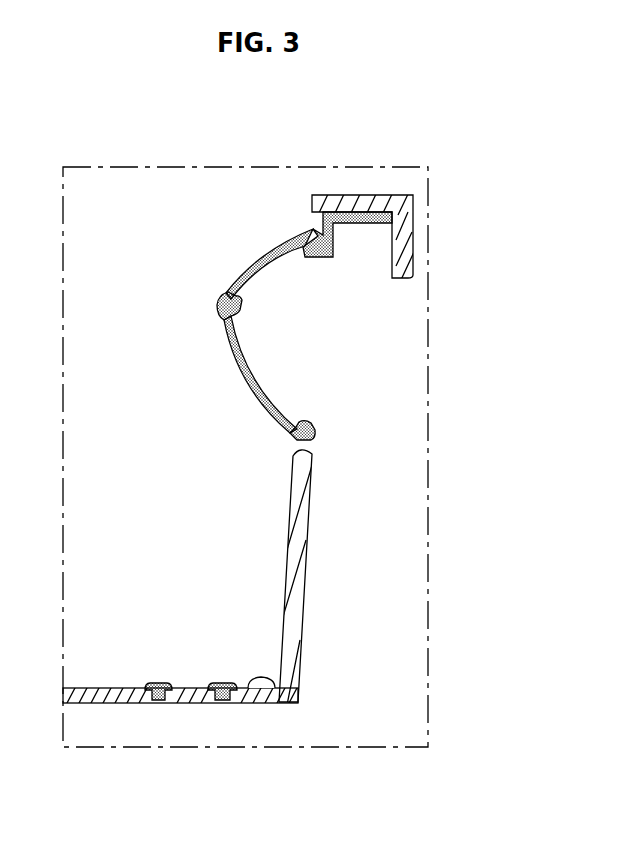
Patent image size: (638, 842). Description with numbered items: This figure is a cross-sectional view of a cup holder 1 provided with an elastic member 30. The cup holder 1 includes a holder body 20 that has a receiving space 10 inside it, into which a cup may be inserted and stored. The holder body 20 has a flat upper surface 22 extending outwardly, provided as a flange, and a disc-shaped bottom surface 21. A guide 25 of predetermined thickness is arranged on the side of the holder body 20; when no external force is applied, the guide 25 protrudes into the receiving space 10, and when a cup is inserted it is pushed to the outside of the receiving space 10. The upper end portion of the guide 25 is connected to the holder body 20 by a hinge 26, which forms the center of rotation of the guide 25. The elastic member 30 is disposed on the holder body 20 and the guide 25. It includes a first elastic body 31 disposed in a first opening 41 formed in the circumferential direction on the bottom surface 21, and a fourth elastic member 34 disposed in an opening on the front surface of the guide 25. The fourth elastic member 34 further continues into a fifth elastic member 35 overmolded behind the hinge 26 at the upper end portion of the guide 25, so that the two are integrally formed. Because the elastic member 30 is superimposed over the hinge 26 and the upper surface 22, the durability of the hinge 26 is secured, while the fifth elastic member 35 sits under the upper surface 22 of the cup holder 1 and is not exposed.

The cup holder 1 is at (421, 131).
The receiving space 10 is at (130, 366).
The holder body 20 is at (298, 553).
The bottom surface 21 is at (266, 690).
The upper surface 22 is at (393, 196).
The guide 25 is at (280, 276).
The hinge 26 is at (316, 229).
The elastic member 30 is at (269, 276).
The first elastic body 31 is at (157, 683).
The fourth elastic member 34 is at (225, 338).
The fifth elastic member 35 is at (338, 219).
The first opening 41 is at (155, 702).